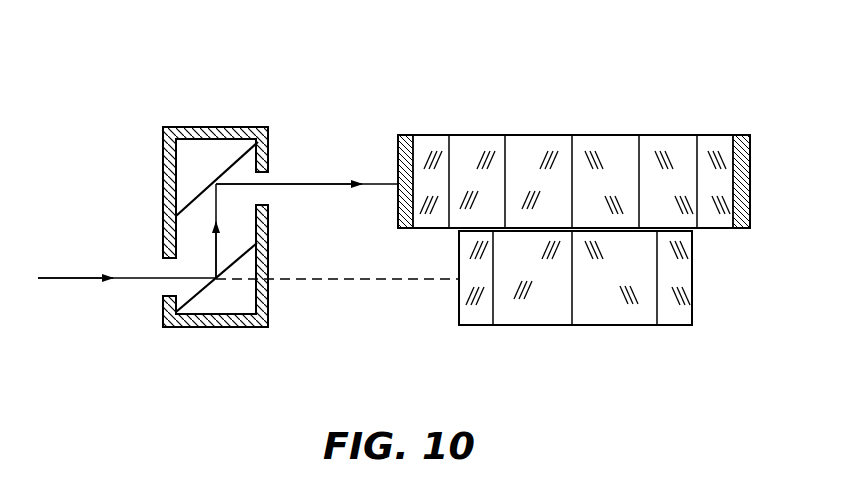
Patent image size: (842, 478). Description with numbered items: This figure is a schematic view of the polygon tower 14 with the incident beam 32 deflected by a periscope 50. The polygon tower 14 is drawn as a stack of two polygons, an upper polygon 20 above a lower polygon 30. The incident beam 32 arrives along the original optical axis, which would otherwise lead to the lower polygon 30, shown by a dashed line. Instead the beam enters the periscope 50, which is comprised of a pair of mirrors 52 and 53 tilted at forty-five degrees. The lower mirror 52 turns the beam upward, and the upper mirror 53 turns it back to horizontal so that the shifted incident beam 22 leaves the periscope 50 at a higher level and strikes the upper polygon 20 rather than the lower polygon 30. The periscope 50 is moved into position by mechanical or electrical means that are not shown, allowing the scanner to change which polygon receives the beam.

The polygon tower 14 is at (607, 175).
The upper polygon 20 is at (750, 186).
The incident beam 22 is at (256, 151).
The lower polygon 30 is at (692, 297).
The incident beam 32 is at (65, 278).
The periscope 50 is at (182, 333).
The mirror 52 is at (253, 239).
The mirror 53 is at (226, 100).